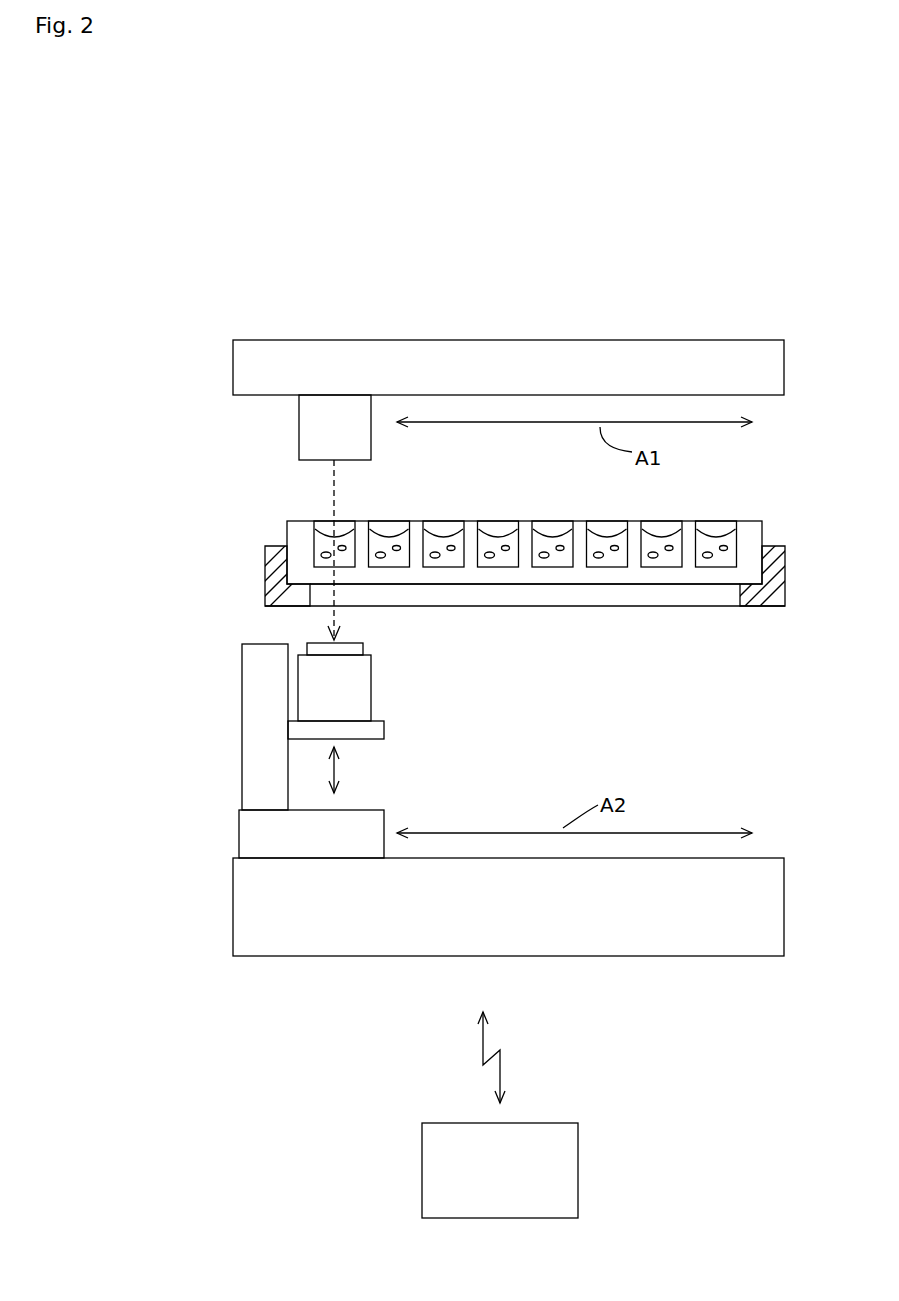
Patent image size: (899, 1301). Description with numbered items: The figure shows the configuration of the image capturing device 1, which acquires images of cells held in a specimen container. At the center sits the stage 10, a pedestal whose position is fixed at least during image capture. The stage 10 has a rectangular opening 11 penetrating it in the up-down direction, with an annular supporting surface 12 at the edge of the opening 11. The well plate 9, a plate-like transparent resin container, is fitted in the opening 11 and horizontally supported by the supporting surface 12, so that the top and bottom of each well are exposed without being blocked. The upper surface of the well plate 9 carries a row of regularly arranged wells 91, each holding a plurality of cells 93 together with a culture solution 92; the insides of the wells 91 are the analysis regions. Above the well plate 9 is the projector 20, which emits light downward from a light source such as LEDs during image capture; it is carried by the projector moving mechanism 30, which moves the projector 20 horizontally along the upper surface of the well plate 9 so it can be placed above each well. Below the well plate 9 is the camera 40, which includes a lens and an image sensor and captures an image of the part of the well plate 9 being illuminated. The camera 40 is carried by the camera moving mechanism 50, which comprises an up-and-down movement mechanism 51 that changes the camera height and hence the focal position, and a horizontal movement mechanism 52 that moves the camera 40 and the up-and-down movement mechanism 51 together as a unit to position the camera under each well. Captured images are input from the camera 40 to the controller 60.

The image capturing device 1 is at (417, 293).
The projector moving mechanism 30 is at (632, 358).
The projector 20 is at (322, 427).
The stage 10 is at (537, 579).
The opening 11 is at (665, 598).
The supporting surface 12 is at (303, 580).
The well plate 9 is at (524, 554).
The wells 91 is at (443, 527).
The culture solution 92 is at (507, 567).
The cells 93 is at (452, 553).
The camera 40 is at (347, 684).
The camera moving mechanism 50 is at (439, 800).
The up-and-down movement mechanism 51 is at (265, 763).
The horizontal movement mechanism 52 is at (295, 908).
The controller 60 is at (422, 1170).